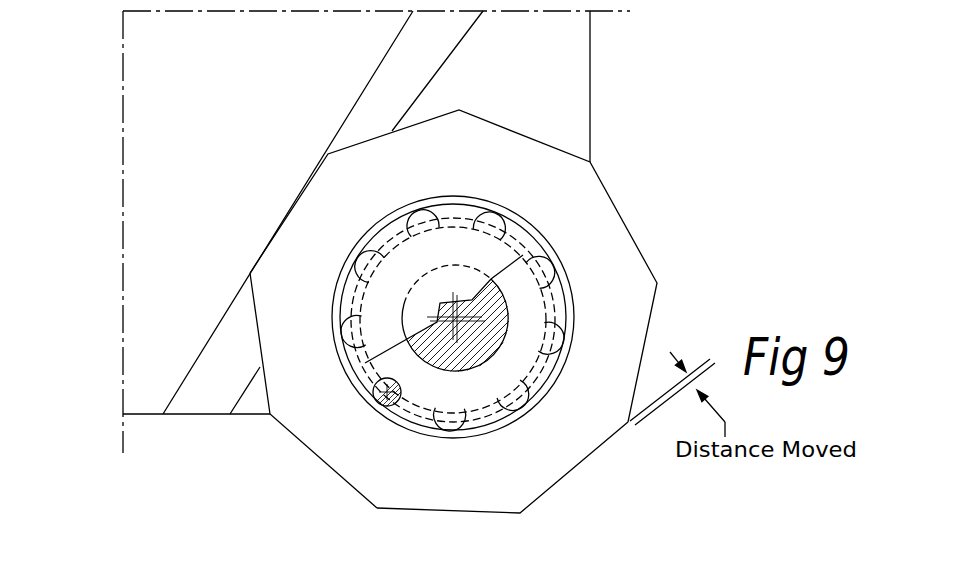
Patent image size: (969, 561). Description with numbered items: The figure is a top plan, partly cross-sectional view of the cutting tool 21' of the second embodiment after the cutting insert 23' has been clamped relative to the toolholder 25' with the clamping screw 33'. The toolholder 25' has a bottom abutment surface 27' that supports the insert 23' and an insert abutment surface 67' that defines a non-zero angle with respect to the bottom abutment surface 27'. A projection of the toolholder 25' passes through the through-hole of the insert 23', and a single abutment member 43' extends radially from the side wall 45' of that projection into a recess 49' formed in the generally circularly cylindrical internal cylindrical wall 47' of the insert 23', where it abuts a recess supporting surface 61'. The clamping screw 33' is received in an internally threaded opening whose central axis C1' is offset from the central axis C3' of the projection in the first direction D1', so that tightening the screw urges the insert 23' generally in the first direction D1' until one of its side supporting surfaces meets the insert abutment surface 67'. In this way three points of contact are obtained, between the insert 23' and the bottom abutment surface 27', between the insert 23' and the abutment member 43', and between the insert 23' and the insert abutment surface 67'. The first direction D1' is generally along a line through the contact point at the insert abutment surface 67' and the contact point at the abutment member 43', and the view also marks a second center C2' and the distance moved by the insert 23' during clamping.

The cutting tool 21' is at (550, 474).
The cutting insert 23' is at (486, 309).
The toolholder 25' is at (346, 232).
The bottom abutment surface 27' is at (387, 212).
The clamping screw 33' is at (487, 264).
The abutment member 43' is at (345, 415).
The side wall 45' is at (503, 301).
The internal cylindrical wall 47' is at (478, 371).
The recess 49' is at (532, 320).
The recess supporting surface 61' is at (427, 363).
The insert abutment surface 67' is at (325, 248).
The central axis of internally threaded opening C1' is at (380, 316).
The second center axis C2' is at (381, 330).
The central axis of projection C3' is at (511, 320).
The first direction D1' is at (373, 334).